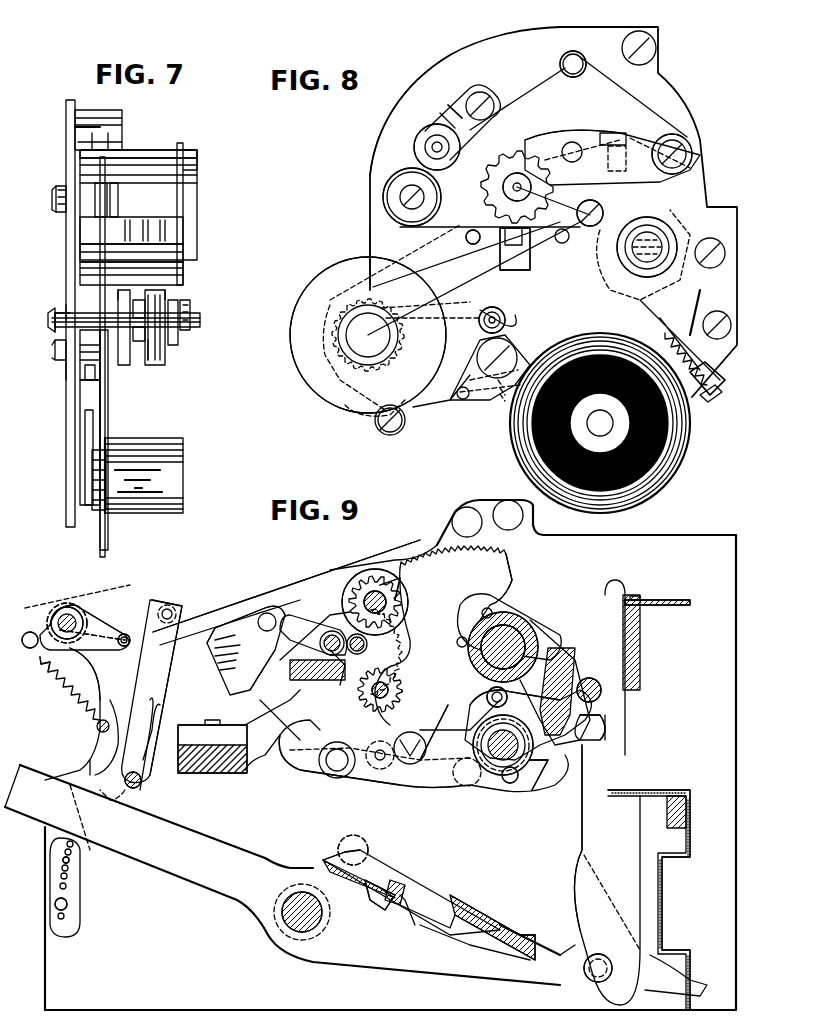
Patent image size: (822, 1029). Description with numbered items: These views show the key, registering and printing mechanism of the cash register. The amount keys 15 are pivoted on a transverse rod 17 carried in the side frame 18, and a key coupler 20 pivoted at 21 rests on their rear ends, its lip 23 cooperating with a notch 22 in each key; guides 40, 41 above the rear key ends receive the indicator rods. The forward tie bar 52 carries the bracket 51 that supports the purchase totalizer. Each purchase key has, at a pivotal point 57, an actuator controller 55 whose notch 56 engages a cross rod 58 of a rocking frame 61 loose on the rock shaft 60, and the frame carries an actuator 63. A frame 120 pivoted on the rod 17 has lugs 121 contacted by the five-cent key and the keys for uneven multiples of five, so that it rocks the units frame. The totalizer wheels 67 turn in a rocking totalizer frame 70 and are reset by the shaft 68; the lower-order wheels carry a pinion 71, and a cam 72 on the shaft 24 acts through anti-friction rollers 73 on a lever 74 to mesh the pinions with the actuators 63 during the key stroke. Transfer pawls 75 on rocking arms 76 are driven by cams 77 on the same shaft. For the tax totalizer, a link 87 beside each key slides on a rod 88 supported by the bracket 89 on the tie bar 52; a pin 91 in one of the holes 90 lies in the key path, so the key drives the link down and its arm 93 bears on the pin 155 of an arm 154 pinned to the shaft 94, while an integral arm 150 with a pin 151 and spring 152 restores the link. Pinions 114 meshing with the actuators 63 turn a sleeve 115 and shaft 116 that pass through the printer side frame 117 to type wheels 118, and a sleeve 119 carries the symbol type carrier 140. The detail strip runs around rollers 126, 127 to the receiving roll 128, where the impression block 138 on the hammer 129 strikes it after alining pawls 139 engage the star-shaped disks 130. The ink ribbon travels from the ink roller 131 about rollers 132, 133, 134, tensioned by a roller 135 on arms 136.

In FIG. 9, the amount keys 15 is at (148, 862).
In FIG. 9, the transverse rod 17 is at (285, 920).
In FIG. 9, the side frame 18 is at (320, 568).
In FIG. 9, the key coupler 20 is at (515, 895).
In FIG. 7, the key coupler pivot 21 is at (58, 343).
In FIG. 8, the key coupler pivot 21 is at (504, 325).
In FIG. 9, the key coupler pivot 21 is at (348, 845).
In FIG. 9, the notch 22 is at (570, 948).
In FIG. 9, the lip 23 is at (530, 925).
In FIG. 7, the shaft 24 is at (60, 218).
In FIG. 8, the shaft 24 is at (647, 232).
In FIG. 9, the shaft 24 is at (510, 748).
In FIG. 9, the guide 40 is at (690, 820).
In FIG. 9, the guide 41 is at (685, 605).
In FIG. 9, the bracket 51 is at (285, 780).
In FIG. 9, the forward tie bar 52 is at (205, 770).
In FIG. 9, the actuator controller 55 is at (582, 802).
In FIG. 9, the notch 56 is at (603, 715).
In FIG. 9, the pivotal point 57 is at (583, 968).
In FIG. 9, the cross rod 58 is at (585, 680).
In FIG. 9, the rock shaft 60 is at (503, 630).
In FIG. 9, the rocking frame 61 is at (525, 650).
In FIG. 9, the actuator 63 is at (493, 563).
In FIG. 9, the totalizer wheels 67 is at (360, 577).
In FIG. 9, the shaft 68 is at (380, 590).
In FIG. 9, the rocking totalizer frame 70 is at (322, 700).
In FIG. 9, the pinion 71 is at (390, 585).
In FIG. 9, the cam 72 is at (490, 720).
In FIG. 9, the anti-friction rollers 73 is at (490, 695).
In FIG. 9, the lever 74 is at (450, 725).
In FIG. 9, the transfer pawl 75 is at (285, 605).
In FIG. 9, the rocking arm 76 is at (258, 660).
In FIG. 9, the cam 77 is at (530, 752).
In FIG. 9, the link 87 is at (145, 682).
In FIG. 9, the rod 88 is at (145, 790).
In FIG. 9, the bracket 89 is at (100, 663).
In FIG. 9, the holes 90 is at (70, 875).
In FIG. 9, the pin 91 is at (72, 905).
In FIG. 9, the arm 93 is at (90, 606).
In FIG. 9, the shaft 94 is at (58, 612).
In FIG. 9, the pinion 114 is at (372, 710).
In FIG. 7, the sleeve 115 is at (60, 322).
In FIG. 9, the sleeve 115 is at (375, 688).
In FIG. 7, the shaft 116 is at (58, 325).
In FIG. 9, the shaft 116 is at (385, 680).
In FIG. 7, the printer side frame 117 is at (70, 370).
In FIG. 8, the printer side frame 117 is at (395, 128).
In FIG. 7, the type wheels 118 is at (160, 332).
In FIG. 8, the type wheels 118 is at (490, 182).
In FIG. 7, the sleeve 119 is at (70, 310).
In FIG. 9, the frame 120 is at (323, 862).
In FIG. 9, the lugs 121 is at (400, 915).
In FIG. 8, the roller 126 is at (558, 230).
In FIG. 8, the roller 127 is at (478, 228).
In FIG. 8, the receiving roll 128 is at (370, 335).
In FIG. 8, the hammer 129 is at (700, 290).
In FIG. 8, the star-shaped disks 130 is at (490, 197).
In FIG. 8, the ink roller 131 is at (396, 186).
In FIG. 8, the roller 132 is at (588, 203).
In FIG. 8, the roller 133 is at (672, 136).
In FIG. 8, the roller 134 is at (573, 78).
In FIG. 8, the roller 135 is at (425, 127).
In FIG. 8, the arms 136 is at (462, 113).
In FIG. 8, the impression block 138 is at (502, 252).
In FIG. 7, the alining pawls 139 is at (170, 300).
In FIG. 8, the alining pawls 139 is at (555, 138).
In FIG. 7, the type carrier 140 is at (120, 300).
In FIG. 9, the integral arm 150 is at (50, 625).
In FIG. 9, the pin 151 is at (28, 636).
In FIG. 9, the spring 152 is at (45, 660).
In FIG. 9, the arm 154 is at (105, 650).
In FIG. 9, the pin 155 is at (124, 635).